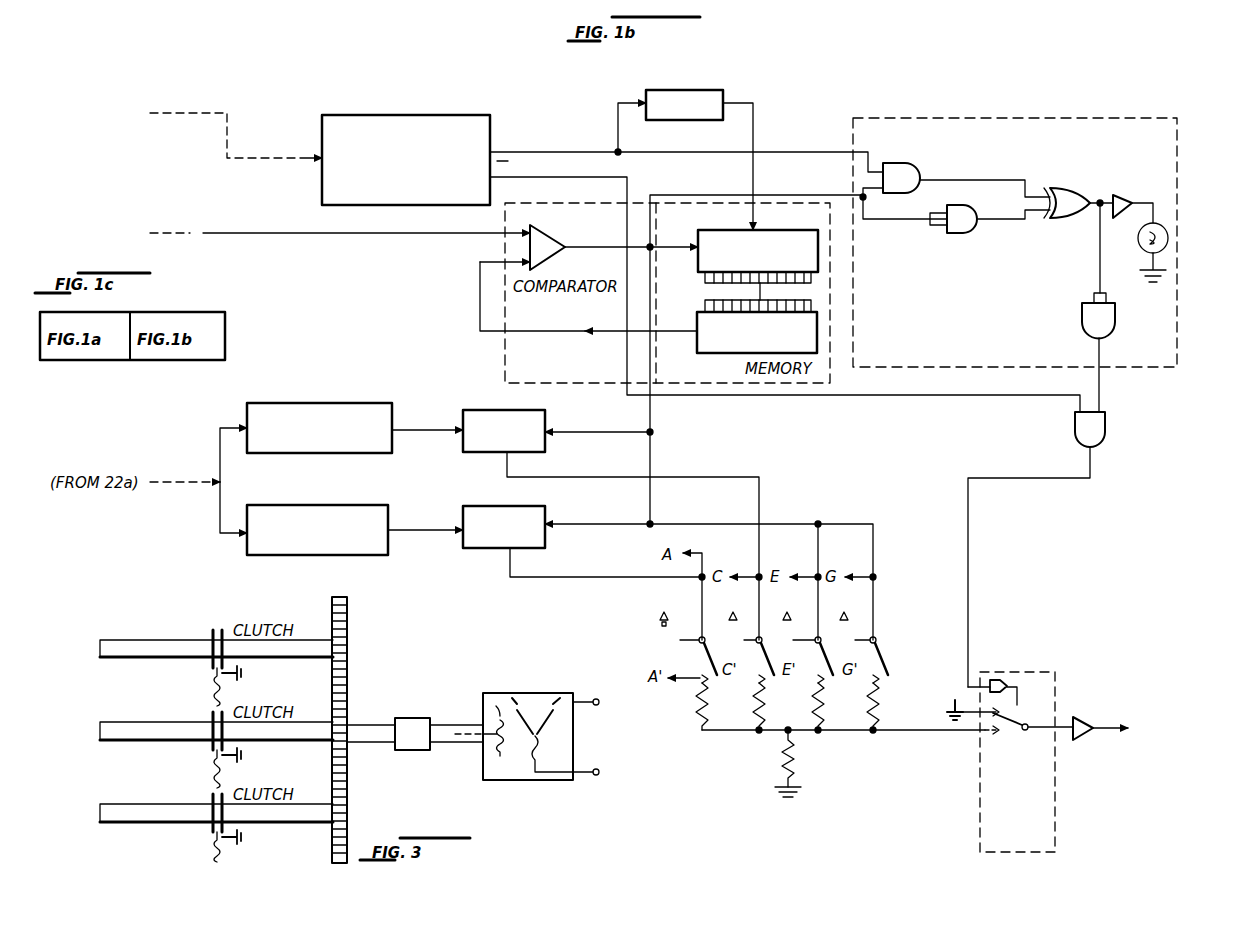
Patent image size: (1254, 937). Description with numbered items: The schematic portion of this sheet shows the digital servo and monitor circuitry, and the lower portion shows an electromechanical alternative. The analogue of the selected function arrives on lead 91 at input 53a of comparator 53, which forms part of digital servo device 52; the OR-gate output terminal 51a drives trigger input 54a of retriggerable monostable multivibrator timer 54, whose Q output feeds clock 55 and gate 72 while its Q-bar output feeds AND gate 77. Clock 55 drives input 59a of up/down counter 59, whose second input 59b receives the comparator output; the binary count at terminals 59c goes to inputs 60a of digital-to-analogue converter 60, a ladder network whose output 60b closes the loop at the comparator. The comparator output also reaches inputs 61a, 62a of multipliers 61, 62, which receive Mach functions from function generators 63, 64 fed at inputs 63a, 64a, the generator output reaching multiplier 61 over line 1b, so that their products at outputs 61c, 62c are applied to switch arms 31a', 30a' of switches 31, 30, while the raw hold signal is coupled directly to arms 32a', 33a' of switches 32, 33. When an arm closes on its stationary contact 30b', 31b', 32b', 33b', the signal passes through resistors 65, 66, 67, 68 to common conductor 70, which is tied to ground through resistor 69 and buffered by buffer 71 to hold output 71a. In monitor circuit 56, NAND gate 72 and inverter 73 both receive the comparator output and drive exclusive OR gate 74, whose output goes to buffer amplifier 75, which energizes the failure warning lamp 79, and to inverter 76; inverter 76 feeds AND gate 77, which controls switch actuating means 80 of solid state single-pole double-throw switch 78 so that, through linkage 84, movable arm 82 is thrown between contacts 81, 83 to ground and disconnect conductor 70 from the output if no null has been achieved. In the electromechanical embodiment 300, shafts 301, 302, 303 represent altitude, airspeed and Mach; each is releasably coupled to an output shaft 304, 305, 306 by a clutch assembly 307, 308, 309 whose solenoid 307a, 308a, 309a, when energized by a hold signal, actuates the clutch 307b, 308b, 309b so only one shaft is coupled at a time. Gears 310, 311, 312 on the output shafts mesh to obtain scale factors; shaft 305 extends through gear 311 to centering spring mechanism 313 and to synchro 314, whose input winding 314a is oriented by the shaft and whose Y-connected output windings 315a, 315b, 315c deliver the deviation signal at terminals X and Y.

In FIG. 1b, the signal line from function generator 1b is at (440, 428).
In FIG. 1b, the switch 30 is at (673, 614).
In FIG. 1b, the second switch arm 30a' is at (724, 656).
In FIG. 1b, the stationary contact 30b' is at (722, 702).
In FIG. 1b, the switch 31 is at (735, 614).
In FIG. 1b, the second switch arm 31a' is at (781, 656).
In FIG. 1b, the stationary contact 31b' is at (779, 702).
In FIG. 1b, the switch 32 is at (795, 614).
In FIG. 1b, the second switch arm 32a' is at (840, 656).
In FIG. 1b, the stationary contact 32b' is at (838, 702).
In FIG. 1b, the switch 33 is at (851, 614).
In FIG. 1b, the second switch arm 33a' is at (899, 656).
In FIG. 1b, the stationary contact 33b' is at (896, 702).
In FIG. 1b, the output terminal 51a is at (195, 110).
In FIG. 1b, the digital servo device 52 is at (525, 232).
In FIG. 1b, the comparator circuit 53 is at (555, 236).
In FIG. 1b, the comparator input 53a is at (525, 244).
In FIG. 1b, the retriggerable monostable multivibrator timer 54 is at (418, 115).
In FIG. 1b, the trigger input 54a is at (302, 156).
In FIG. 1b, the clock 55 is at (704, 90).
In FIG. 1b, the monitor circuit 56 is at (1025, 118).
In FIG. 1b, the up/down counter 59 is at (698, 242).
In FIG. 1b, the counter input terminal 59a is at (760, 230).
In FIG. 1b, the counter second input terminal 59b is at (675, 250).
In FIG. 1b, the counter output terminals 59c is at (768, 283).
In FIG. 1b, the digital to analogue converter 60 is at (697, 350).
In FIG. 1b, the converter input terminals 60a is at (716, 300).
In FIG. 1b, the converter output 60b is at (608, 333).
In FIG. 1b, the multiplier circuit 61 is at (494, 410).
In FIG. 1b, the multiplier input 61a is at (572, 432).
In FIG. 1b, the multiplier output 61c is at (500, 470).
In FIG. 1b, the multiplier circuit 62 is at (470, 548).
In FIG. 1b, the multiplier input 62a is at (628, 520).
In FIG. 1b, the multiplier output 62c is at (512, 554).
In FIG. 1b, the Mach function generator 63 is at (336, 403).
In FIG. 1b, the function generator input 63a is at (232, 426).
In FIG. 1b, the Mach function generator 64 is at (330, 557).
In FIG. 1b, the function generator input 64a is at (230, 540).
In FIG. 1b, the resistor 65 is at (697, 712).
In FIG. 1b, the resistor 66 is at (721, 711).
In FIG. 1b, the resistor 67 is at (800, 706).
In FIG. 1b, the resistor 68 is at (864, 706).
In FIG. 1b, the resistor 69 is at (796, 758).
In FIG. 1b, the conductor 70 is at (748, 732).
In FIG. 1b, the buffer circuit 71 is at (1080, 736).
In FIG. 1b, the hold output 71a is at (1100, 728).
In FIG. 1b, the NAND gate 72 is at (898, 165).
In FIG. 1b, the inverter 73 is at (962, 234).
In FIG. 1b, the exclusive OR gate 74 is at (1072, 186).
In FIG. 1b, the buffer amplifier 75 is at (1125, 194).
In FIG. 1b, the inverter 76 is at (1116, 325).
In FIG. 1b, the AND gate 77 is at (1106, 438).
In FIG. 1b, the solid state single pole double throw switch mechanism 78 is at (1033, 672).
In FIG. 1b, the lamp 79 is at (1140, 248).
In FIG. 1b, the switch actuating means 80 is at (1000, 678).
In FIG. 1b, the switch contact 81 is at (1005, 714).
In FIG. 1b, the movable switch arm 82 is at (1022, 732).
In FIG. 1b, the switch contact 83 is at (999, 736).
In FIG. 1b, the linkage 84 is at (1020, 692).
In FIG. 1b, the lead 91 is at (190, 232).
In FIG. 3, the electromechanical embodiment 300 is at (483, 635).
In FIG. 3, the shaft 301 is at (100, 648).
In FIG. 3, the shaft 302 is at (100, 730).
In FIG. 3, the shaft 303 is at (100, 812).
In FIG. 3, the output shaft 304 is at (260, 658).
In FIG. 3, the output shaft 305 is at (260, 740).
In FIG. 3, the output shaft 306 is at (260, 822).
In FIG. 3, the clutch assembly 307 is at (208, 660).
In FIG. 3, the operating solenoid 307a is at (212, 684).
In FIG. 3, the clutch assembly 307b is at (212, 628).
In FIG. 3, the clutch assembly 308 is at (208, 744).
In FIG. 3, the operating solenoid 308a is at (212, 768).
In FIG. 3, the clutch assembly 308b is at (212, 716).
In FIG. 3, the clutch assembly 309 is at (208, 826).
In FIG. 3, the operating solenoid 309a is at (212, 850).
In FIG. 3, the clutch assembly 309b is at (212, 800).
In FIG. 3, the gear 310 is at (350, 632).
In FIG. 3, the gear 311 is at (362, 715).
In FIG. 3, the gear 312 is at (350, 794).
In FIG. 3, the centering spring mechanism 313 is at (412, 729).
In FIG. 3, the synchro 314 is at (535, 780).
In FIG. 3, the input winding 314a is at (498, 760).
In FIG. 3, the output winding 315a is at (527, 700).
In FIG. 3, the output winding 315b is at (547, 702).
In FIG. 3, the output winding 315c is at (545, 756).